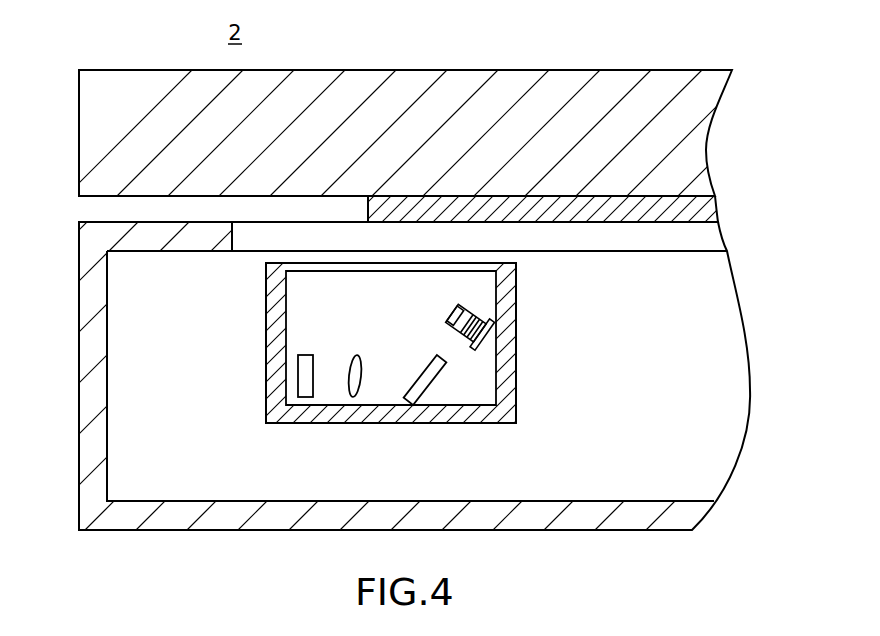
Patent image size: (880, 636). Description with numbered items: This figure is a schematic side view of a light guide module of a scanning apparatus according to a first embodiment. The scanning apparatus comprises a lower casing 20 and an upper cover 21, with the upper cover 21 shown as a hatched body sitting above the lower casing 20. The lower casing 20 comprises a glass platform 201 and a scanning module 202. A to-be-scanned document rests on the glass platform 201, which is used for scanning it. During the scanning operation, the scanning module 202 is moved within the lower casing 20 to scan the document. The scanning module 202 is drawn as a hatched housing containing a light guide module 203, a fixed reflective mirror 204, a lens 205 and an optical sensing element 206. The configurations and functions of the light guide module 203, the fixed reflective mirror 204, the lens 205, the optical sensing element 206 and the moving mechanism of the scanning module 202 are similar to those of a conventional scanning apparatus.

The upper cover 21 is at (562, 83).
The lower casing 20 is at (93, 290).
The glass platform 201 is at (706, 237).
The scanning module 202 is at (517, 311).
The light guide module 203 is at (473, 313).
The fixed reflective mirror 204 is at (428, 382).
The lens 205 is at (350, 383).
The optical sensing element 206 is at (303, 373).